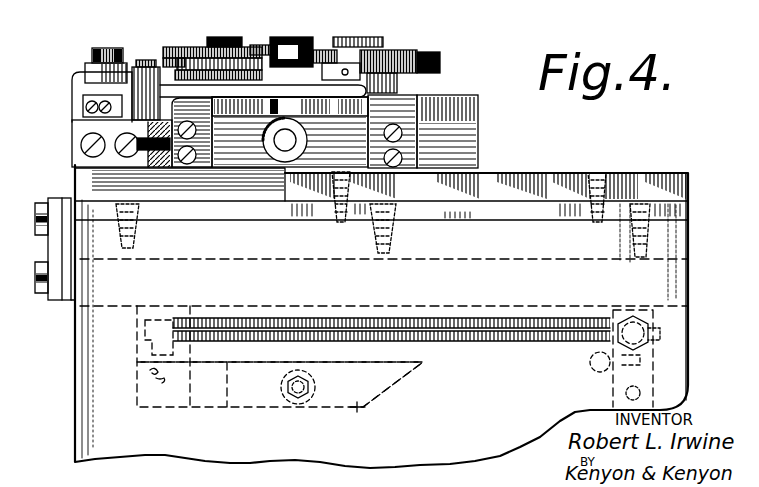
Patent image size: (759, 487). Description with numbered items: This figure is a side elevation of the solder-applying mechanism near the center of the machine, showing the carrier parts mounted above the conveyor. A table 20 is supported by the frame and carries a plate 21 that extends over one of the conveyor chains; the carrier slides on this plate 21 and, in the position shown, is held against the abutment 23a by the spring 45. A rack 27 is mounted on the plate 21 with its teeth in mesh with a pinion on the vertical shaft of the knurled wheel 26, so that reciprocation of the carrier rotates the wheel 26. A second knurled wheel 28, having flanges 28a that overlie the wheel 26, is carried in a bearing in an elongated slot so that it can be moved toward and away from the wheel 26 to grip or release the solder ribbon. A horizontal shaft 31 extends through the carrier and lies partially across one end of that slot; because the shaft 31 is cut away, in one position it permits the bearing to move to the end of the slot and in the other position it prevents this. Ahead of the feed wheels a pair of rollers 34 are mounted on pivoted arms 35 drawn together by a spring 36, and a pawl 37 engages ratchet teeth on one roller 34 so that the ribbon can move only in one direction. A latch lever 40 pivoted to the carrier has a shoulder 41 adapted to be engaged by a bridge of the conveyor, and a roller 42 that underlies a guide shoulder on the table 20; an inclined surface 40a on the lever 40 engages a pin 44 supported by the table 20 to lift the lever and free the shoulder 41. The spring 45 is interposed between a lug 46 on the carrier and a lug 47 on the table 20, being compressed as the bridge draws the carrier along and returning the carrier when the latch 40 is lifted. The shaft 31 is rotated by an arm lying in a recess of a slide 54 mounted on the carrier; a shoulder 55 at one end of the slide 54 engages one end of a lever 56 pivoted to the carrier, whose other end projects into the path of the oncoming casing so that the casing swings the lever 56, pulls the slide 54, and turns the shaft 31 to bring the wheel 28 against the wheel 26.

The table 20 is at (87, 405).
The plate 21 is at (672, 238).
The abutment 23a is at (57, 205).
The knurled wheel 26 is at (425, 58).
The rack 27 is at (548, 185).
The second knurled wheel 28 is at (193, 47).
The flanges 28a is at (165, 55).
The shaft 31 is at (288, 141).
The rollers 34 is at (322, 50).
The pivoted arms 35 is at (302, 72).
The spring 36 is at (285, 40).
The pawl 37 is at (333, 62).
The latch lever 40 is at (248, 400).
The inclined surface 40a is at (403, 380).
The shoulder 41 is at (355, 410).
The roller 42 is at (298, 404).
The pin 44 is at (160, 380).
The spring 45 is at (505, 341).
The lug 46 is at (160, 342).
The lug 47 is at (650, 358).
The slide 54 is at (150, 105).
The shoulder 55 is at (80, 84).
The lever 56 is at (96, 64).